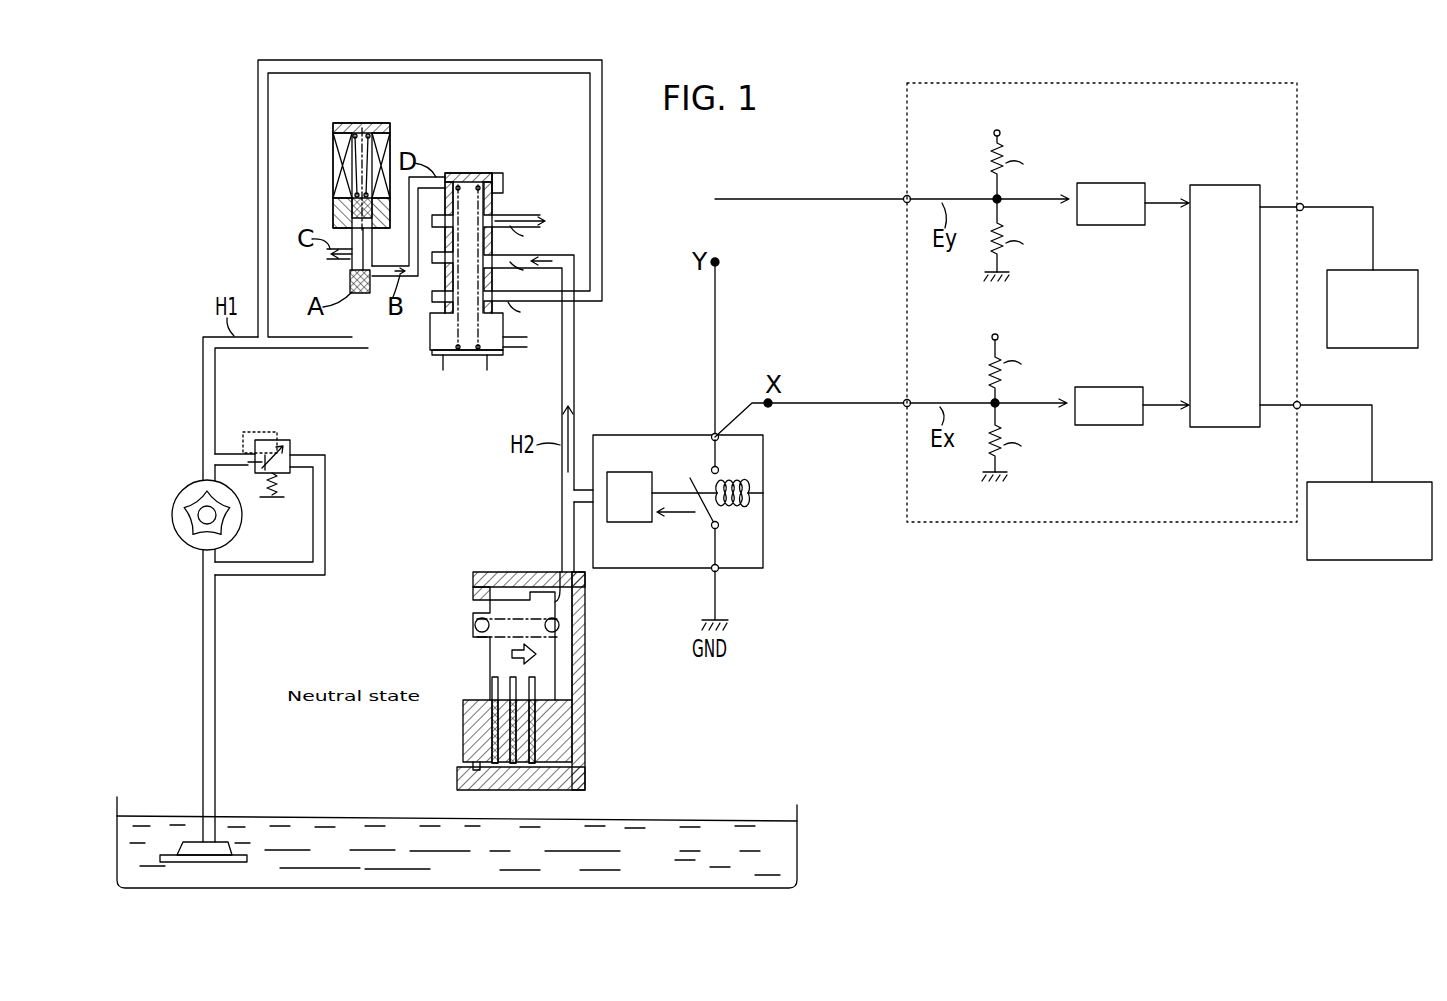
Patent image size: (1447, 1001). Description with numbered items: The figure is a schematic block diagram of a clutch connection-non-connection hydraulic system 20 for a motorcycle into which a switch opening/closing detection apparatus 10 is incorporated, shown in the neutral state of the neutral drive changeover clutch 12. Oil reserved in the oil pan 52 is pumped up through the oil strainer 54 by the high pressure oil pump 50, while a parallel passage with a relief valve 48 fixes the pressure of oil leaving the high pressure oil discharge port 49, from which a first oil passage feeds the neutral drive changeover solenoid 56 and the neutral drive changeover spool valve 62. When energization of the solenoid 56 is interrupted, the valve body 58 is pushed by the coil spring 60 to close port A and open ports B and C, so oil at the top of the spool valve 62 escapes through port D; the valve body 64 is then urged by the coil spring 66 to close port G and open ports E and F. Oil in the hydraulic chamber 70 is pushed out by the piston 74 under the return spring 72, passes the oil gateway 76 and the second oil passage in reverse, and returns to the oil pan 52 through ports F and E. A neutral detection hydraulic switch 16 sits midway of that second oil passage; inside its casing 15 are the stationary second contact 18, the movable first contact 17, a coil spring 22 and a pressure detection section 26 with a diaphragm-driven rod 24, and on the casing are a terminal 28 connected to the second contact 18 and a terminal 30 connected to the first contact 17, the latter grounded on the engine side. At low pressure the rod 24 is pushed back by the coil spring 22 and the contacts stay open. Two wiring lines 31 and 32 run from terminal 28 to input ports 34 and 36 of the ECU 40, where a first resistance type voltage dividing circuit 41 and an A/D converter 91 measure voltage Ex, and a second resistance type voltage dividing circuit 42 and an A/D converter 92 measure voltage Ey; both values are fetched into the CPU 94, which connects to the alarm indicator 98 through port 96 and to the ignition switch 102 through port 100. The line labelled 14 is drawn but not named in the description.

The switch opening/closing detection apparatus 10 is at (902, 99).
The neutral drive changeover clutch 12 is at (543, 661).
The oil passage 14 is at (578, 370).
The casing 15 is at (627, 434).
The neutral detection hydraulic switch 16 is at (701, 446).
The first contact 17 is at (711, 526).
The second contact 18 is at (711, 470).
The clutch connection-non-connection hydraulic system 20 is at (731, 153).
The coil spring 22 is at (736, 484).
The rod 24 is at (660, 490).
The pressure detection section 26 is at (625, 523).
The terminal 28 is at (712, 434).
The terminal 30 is at (712, 571).
The wiring line 31 is at (830, 401).
The wiring line 32 is at (800, 197).
The input port 34 is at (904, 402).
The input port 36 is at (904, 198).
The ECU 40 is at (1303, 140).
The first resistance type voltage dividing circuit 41 is at (983, 365).
The second resistance type voltage dividing circuit 42 is at (985, 161).
The relief valve 48 is at (272, 431).
The high pressure oil discharge port 49 is at (202, 388).
The high pressure oil pump 50 is at (172, 516).
The oil pan 52 is at (800, 812).
The oil strainer 54 is at (237, 845).
The neutral drive changeover solenoid 56 is at (355, 158).
The valve body 58 is at (348, 286).
The coil spring 60 is at (352, 183).
The neutral drive changeover spool valve 62 is at (474, 245).
The valve body 64 is at (494, 176).
The coil spring 66 is at (430, 340).
The hydraulic chamber 70 is at (585, 680).
The return spring 72 is at (482, 633).
The piston 74 is at (566, 704).
The oil gateway 76 is at (560, 574).
The A/D converter 91 is at (1125, 386).
The A/D converter 92 is at (1127, 182).
The CPU 94 is at (1243, 184).
The port 96 is at (1303, 205).
The alarm indicator 98 is at (1396, 269).
The port 100 is at (1300, 403).
The ignition switch 102 is at (1410, 481).